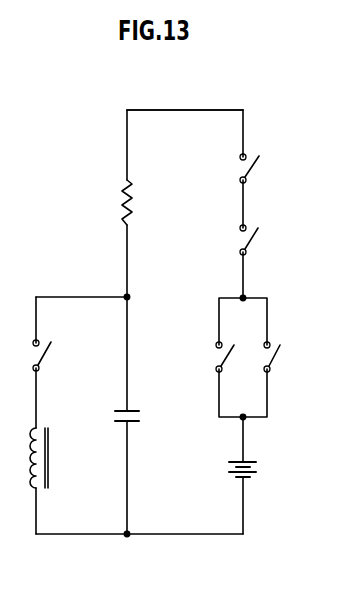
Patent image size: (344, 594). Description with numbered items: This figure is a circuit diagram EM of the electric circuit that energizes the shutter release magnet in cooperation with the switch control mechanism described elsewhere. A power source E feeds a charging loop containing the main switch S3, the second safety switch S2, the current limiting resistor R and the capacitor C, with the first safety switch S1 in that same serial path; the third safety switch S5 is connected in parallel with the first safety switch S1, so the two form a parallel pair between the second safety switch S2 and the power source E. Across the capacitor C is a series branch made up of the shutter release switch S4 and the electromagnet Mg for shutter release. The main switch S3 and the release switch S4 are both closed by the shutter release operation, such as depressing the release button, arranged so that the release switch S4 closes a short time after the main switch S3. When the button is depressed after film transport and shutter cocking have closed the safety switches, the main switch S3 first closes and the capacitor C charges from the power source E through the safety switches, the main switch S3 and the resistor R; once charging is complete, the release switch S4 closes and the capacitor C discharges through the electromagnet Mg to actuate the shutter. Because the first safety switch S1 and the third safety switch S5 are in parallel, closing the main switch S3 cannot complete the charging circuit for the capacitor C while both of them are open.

The electronic circuit / electromagnet module EM is at (182, 108).
The current limiting resistor R is at (134, 204).
The capacitor C is at (140, 418).
The first safety switch S1 is at (226, 359).
The second safety switch S2 is at (249, 246).
The main switch S3 is at (249, 178).
The shutter release switch S4 is at (44, 356).
The third safety switch S5 is at (273, 360).
The power source E is at (258, 468).
The electromagnet for shutter release Mg is at (50, 449).